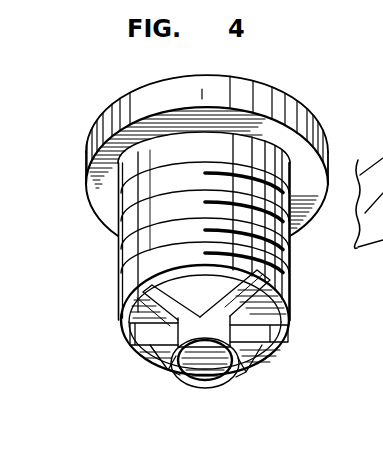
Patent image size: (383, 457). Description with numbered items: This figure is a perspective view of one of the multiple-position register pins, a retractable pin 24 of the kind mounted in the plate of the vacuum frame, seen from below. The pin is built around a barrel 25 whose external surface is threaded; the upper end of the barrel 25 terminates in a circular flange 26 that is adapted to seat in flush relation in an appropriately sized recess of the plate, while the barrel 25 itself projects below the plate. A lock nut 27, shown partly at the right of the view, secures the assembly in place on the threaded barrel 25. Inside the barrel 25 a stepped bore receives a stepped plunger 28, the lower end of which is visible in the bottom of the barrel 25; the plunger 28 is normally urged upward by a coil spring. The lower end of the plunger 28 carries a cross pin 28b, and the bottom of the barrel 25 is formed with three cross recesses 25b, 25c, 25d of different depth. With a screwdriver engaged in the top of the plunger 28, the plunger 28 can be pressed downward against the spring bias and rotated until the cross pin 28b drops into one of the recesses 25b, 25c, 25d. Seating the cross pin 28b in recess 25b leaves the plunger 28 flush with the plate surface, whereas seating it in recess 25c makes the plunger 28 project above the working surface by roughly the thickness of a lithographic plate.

The retractable pin 24 is at (279, 84).
The circular flange 26 is at (85, 182).
The barrel 25 is at (118, 263).
The cross recess 25b is at (128, 330).
The cross recess 25c is at (157, 277).
The cross recess 25d is at (245, 273).
The stepped plunger 28 is at (205, 372).
The cross pin 28b is at (152, 348).
The lock nut 27 is at (369, 248).